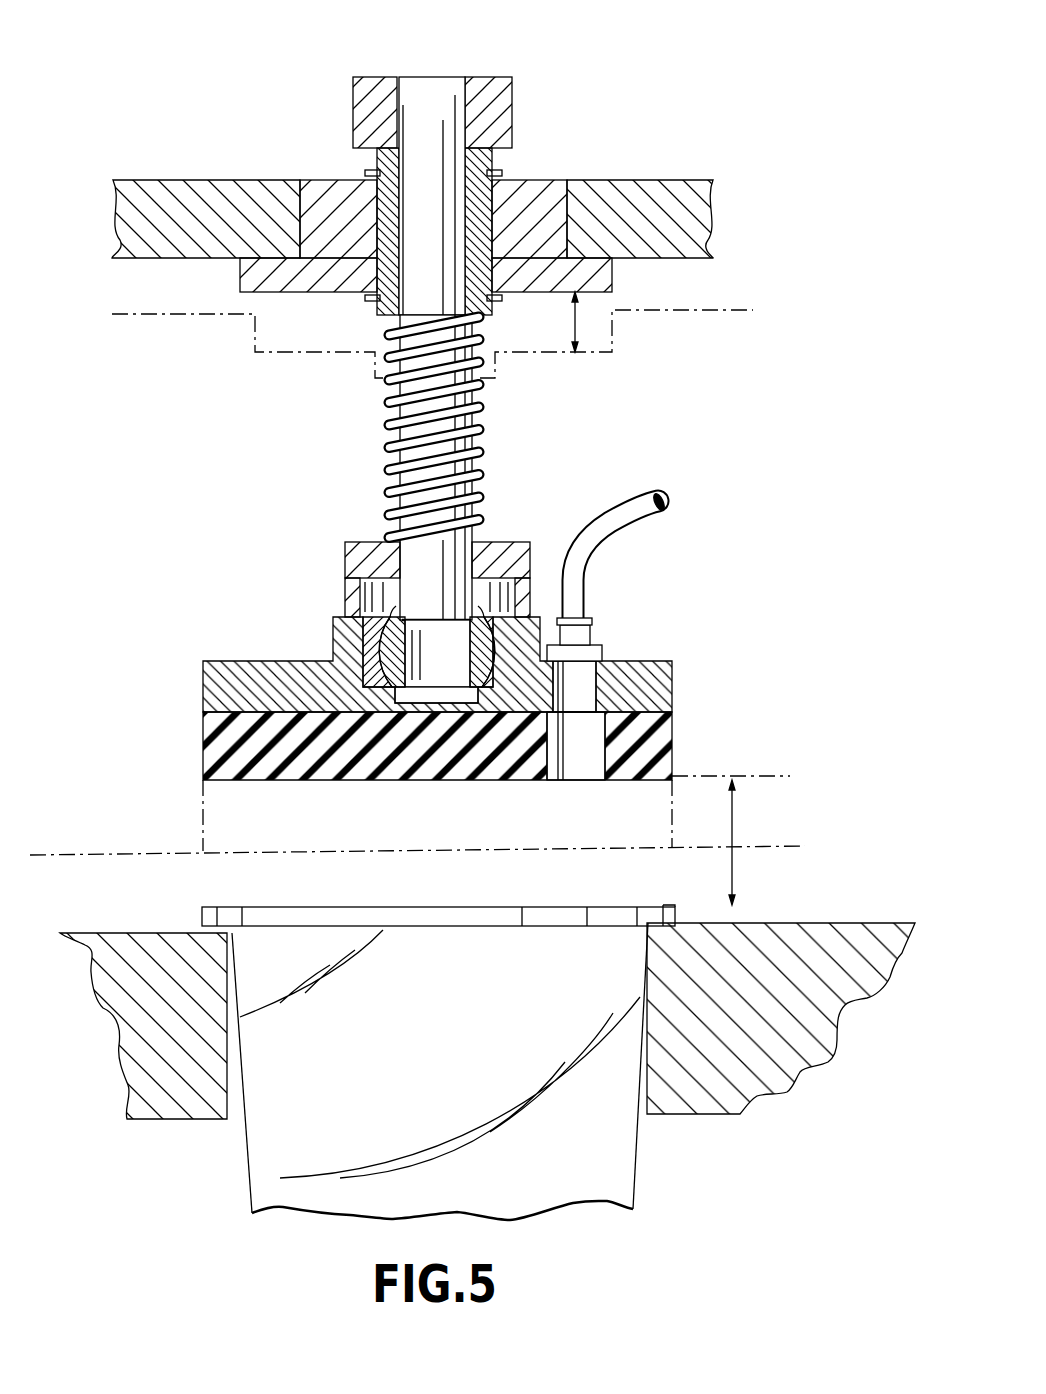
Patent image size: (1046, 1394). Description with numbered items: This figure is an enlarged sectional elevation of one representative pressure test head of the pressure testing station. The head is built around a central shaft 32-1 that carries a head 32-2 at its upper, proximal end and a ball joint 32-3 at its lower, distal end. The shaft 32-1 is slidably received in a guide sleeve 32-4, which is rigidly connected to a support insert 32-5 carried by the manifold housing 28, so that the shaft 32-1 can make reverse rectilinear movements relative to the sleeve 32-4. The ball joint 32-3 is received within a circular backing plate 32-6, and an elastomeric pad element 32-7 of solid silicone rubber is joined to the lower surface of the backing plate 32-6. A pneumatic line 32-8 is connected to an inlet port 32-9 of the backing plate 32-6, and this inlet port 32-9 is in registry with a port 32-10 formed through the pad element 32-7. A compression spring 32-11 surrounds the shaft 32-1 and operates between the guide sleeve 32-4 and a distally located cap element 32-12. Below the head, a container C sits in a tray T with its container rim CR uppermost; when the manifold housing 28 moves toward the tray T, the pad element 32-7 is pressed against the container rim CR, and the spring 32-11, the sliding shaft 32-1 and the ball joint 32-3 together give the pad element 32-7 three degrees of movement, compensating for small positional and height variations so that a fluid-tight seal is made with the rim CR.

The manifold housing 28 is at (603, 190).
The central shaft 32-1 is at (418, 107).
The head 32-2 is at (510, 105).
The ball joint 32-3 is at (485, 612).
The guide sleeve 32-4 is at (375, 163).
The support insert 32-5 is at (280, 289).
The circular backing plate 32-6 is at (247, 680).
The elastomeric pad element 32-7 is at (202, 742).
The pneumatic line 32-8 is at (612, 512).
The inlet port 32-9 is at (580, 685).
The port 32-10 is at (590, 755).
The compression spring 32-11 is at (480, 408).
The cap element 32-12 is at (363, 545).
The container rim CR is at (415, 912).
The container C is at (340, 1071).
The tray T is at (788, 945).